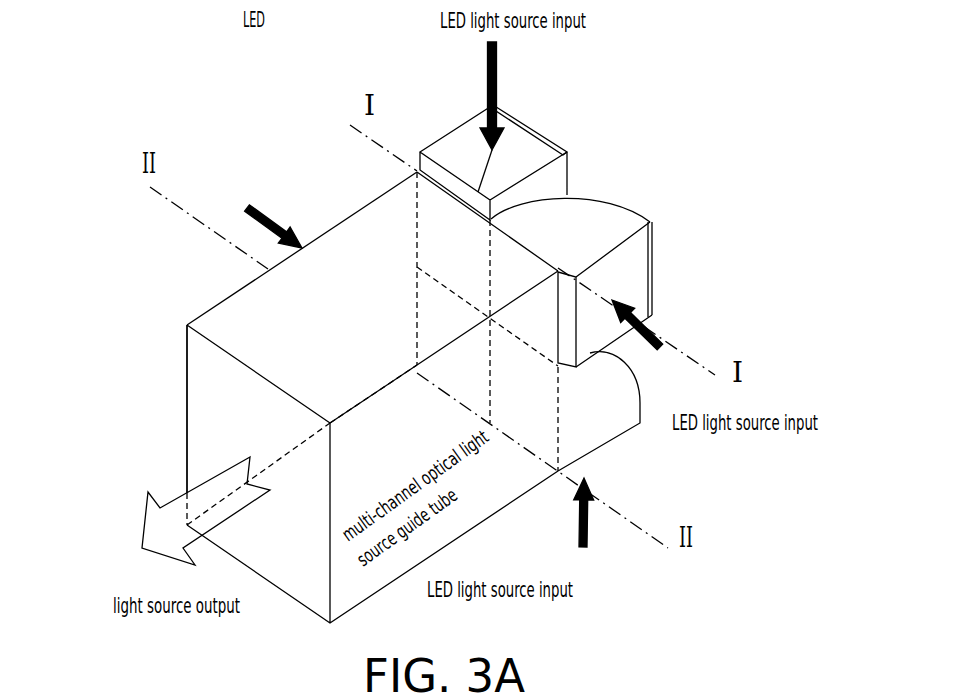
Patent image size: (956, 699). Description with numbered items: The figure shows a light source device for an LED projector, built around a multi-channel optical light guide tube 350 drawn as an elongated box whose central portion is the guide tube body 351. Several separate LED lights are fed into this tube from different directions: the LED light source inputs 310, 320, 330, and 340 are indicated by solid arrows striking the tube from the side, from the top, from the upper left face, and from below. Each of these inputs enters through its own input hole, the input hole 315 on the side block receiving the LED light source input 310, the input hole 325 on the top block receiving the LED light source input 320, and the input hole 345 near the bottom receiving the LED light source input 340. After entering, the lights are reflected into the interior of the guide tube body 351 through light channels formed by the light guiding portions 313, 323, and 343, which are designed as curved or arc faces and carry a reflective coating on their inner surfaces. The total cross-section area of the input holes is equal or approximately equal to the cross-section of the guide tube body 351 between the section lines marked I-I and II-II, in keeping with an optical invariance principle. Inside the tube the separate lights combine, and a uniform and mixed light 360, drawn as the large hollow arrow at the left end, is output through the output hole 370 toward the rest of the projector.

The LED light source input 310 is at (652, 323).
The light guiding portion 313 is at (593, 199).
The input hole 315 is at (642, 260).
The LED light source input 320 is at (497, 78).
The light guiding portion 323 is at (533, 126).
The input hole 325 is at (533, 155).
The LED light source input 330 is at (272, 218).
The LED light source input 340 is at (590, 523).
The light guiding portion 343 is at (606, 350).
The input hole 345 is at (614, 455).
The multi-channel optical light guide tube 350 is at (243, 313).
The guide tube body 351 is at (347, 220).
The uniform and mixed light 360 is at (172, 497).
The output hole 370 is at (208, 396).